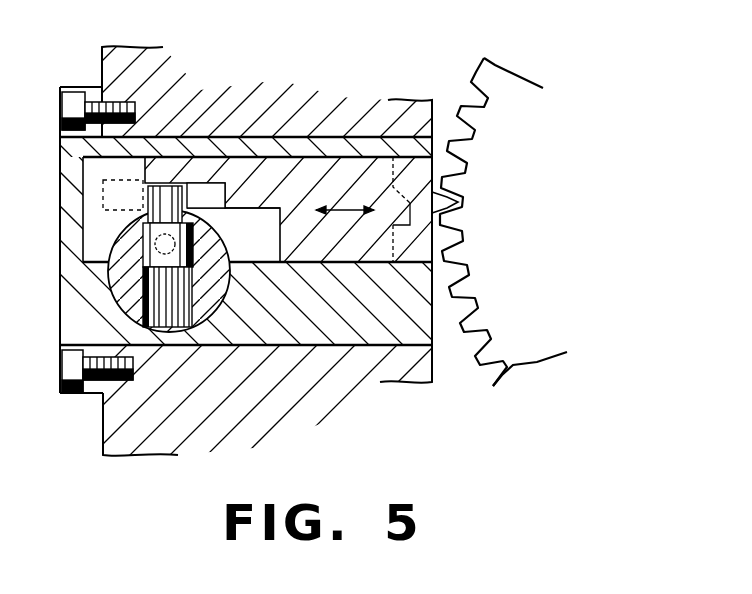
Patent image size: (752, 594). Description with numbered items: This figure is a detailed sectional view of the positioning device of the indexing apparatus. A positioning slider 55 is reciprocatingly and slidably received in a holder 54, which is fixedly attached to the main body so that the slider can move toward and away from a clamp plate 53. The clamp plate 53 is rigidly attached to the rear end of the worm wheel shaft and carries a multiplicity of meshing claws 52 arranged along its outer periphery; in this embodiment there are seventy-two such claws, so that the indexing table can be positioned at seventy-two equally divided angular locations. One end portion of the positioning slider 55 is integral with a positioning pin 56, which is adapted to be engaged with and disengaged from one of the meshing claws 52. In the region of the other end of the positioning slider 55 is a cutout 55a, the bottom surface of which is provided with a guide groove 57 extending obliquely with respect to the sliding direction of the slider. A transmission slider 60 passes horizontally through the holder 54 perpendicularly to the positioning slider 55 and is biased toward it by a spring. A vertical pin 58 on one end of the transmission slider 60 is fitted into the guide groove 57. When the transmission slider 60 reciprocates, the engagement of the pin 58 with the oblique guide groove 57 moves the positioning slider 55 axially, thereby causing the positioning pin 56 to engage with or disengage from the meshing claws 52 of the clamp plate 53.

The meshing claws 52 is at (457, 243).
The clamp plate 53 is at (517, 85).
The holder 54 is at (300, 337).
The positioning slider 55 is at (363, 163).
The cutout 55a is at (268, 212).
The positioning pin 56 is at (452, 204).
The guide groove 57 is at (213, 187).
The vertical pin 58 is at (178, 187).
The transmission slider 60 is at (205, 290).